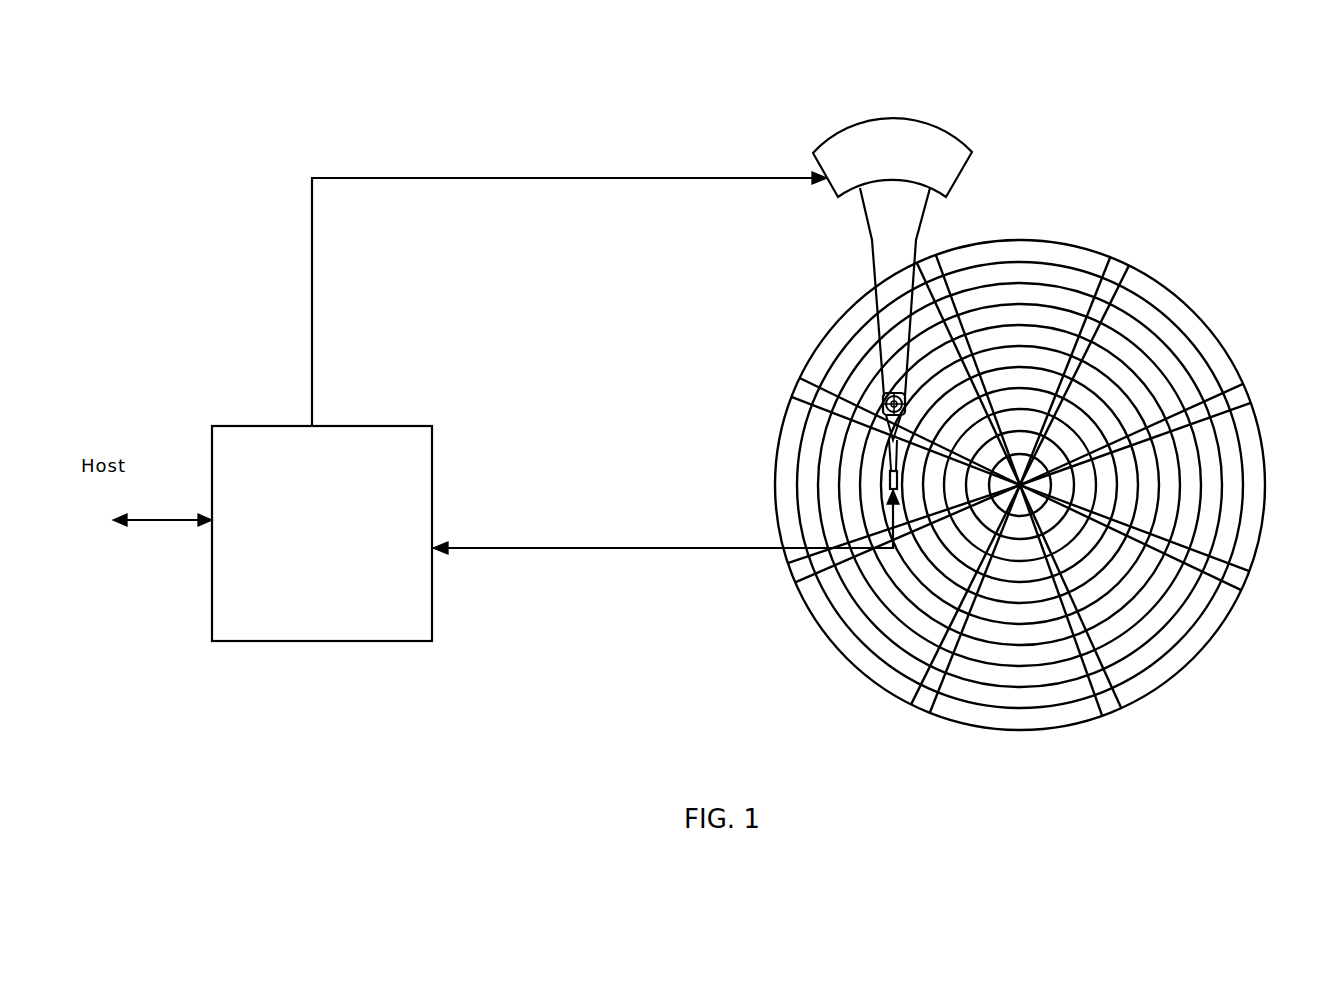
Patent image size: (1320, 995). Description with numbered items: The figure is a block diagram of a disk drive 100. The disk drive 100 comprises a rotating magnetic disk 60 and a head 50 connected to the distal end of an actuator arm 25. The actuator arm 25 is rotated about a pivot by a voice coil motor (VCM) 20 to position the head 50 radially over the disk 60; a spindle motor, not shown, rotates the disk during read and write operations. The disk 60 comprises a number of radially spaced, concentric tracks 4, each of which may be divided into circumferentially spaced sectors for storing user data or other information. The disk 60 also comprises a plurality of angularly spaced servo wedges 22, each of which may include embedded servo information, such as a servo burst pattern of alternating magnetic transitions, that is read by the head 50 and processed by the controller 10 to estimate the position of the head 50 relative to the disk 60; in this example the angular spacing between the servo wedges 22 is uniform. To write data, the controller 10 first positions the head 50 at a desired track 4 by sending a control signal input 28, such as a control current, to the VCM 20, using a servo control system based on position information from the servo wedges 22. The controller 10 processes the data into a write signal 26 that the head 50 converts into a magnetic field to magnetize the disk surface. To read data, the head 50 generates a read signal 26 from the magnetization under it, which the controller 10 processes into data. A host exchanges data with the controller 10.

The disk drive 100 is at (1265, 57).
The tracks 4 is at (1019, 273).
The controller 10 is at (383, 425).
The voice coil motor (VCM) 20 is at (832, 183).
The servo wedges 22 is at (1035, 489).
The actuator arm 25 is at (880, 272).
The write signal / read signal 26 is at (528, 549).
The control signal input 28 is at (311, 312).
The head 50 is at (885, 493).
The disk 60 is at (1020, 458).